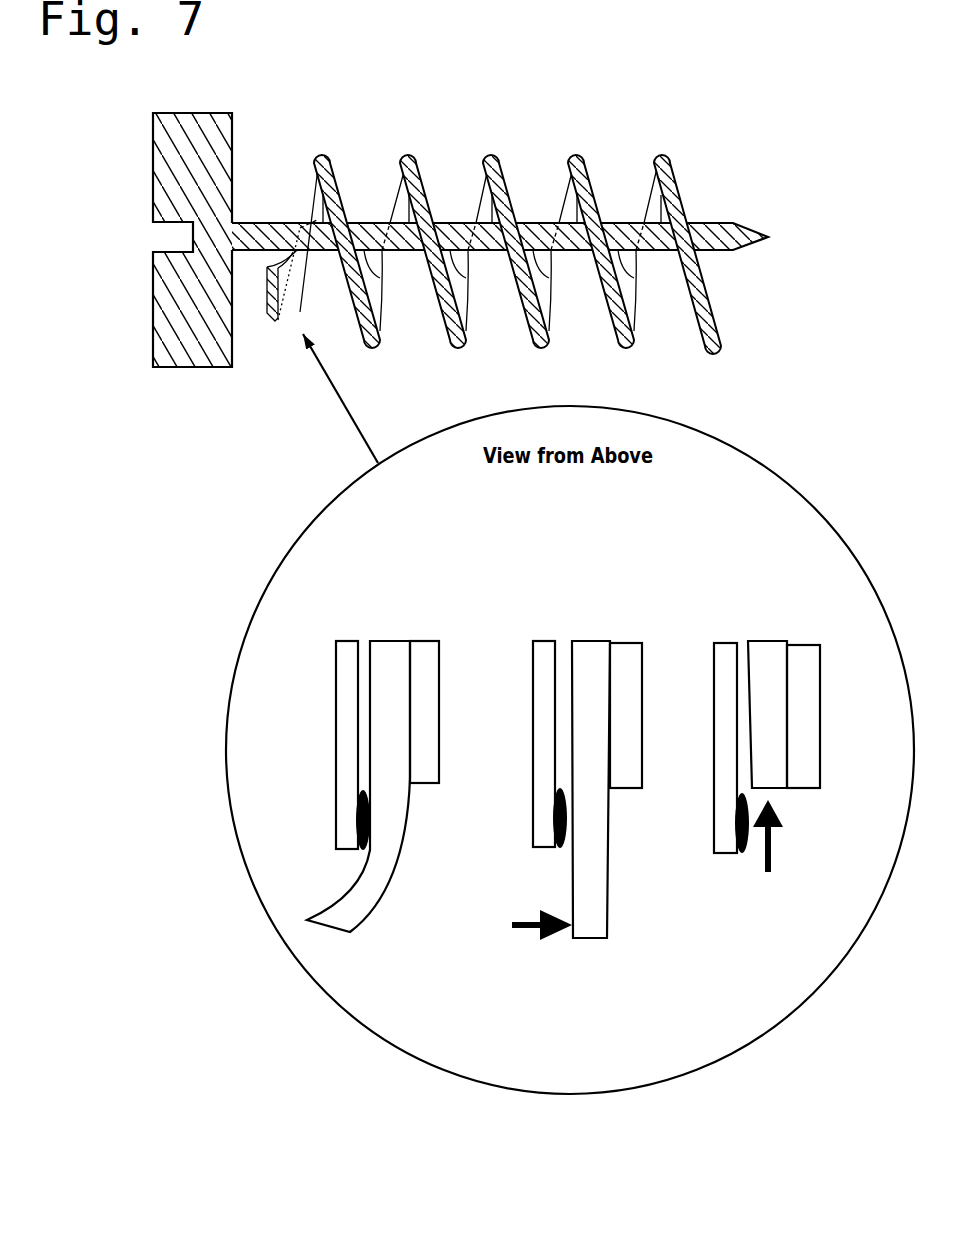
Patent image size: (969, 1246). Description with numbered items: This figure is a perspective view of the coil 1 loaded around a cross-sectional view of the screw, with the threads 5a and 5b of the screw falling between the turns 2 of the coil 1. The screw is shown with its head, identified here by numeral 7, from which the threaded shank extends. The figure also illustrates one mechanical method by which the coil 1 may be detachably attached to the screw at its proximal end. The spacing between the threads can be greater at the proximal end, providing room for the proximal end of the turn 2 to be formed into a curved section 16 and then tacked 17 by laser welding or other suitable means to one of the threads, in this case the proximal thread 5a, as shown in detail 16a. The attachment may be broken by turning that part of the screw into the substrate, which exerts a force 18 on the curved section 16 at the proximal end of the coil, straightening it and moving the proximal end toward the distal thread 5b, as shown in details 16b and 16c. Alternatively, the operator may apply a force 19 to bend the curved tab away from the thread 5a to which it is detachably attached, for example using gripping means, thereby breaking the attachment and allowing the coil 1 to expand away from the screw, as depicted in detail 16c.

The coil 1 is at (730, 298).
The turns of the coil 2 is at (640, 165).
The proximal thread 5a is at (398, 201).
The distal thread 5b is at (485, 297).
The screw head 7 is at (249, 166).
The curved section 16 is at (380, 932).
The detail showing tacked curved section 16a is at (458, 553).
The detail showing straightening of curved section 16b is at (655, 553).
The detail showing coil expanding 16c is at (832, 553).
The tack 17 is at (350, 827).
The force 18 is at (535, 957).
The force 19 is at (756, 857).